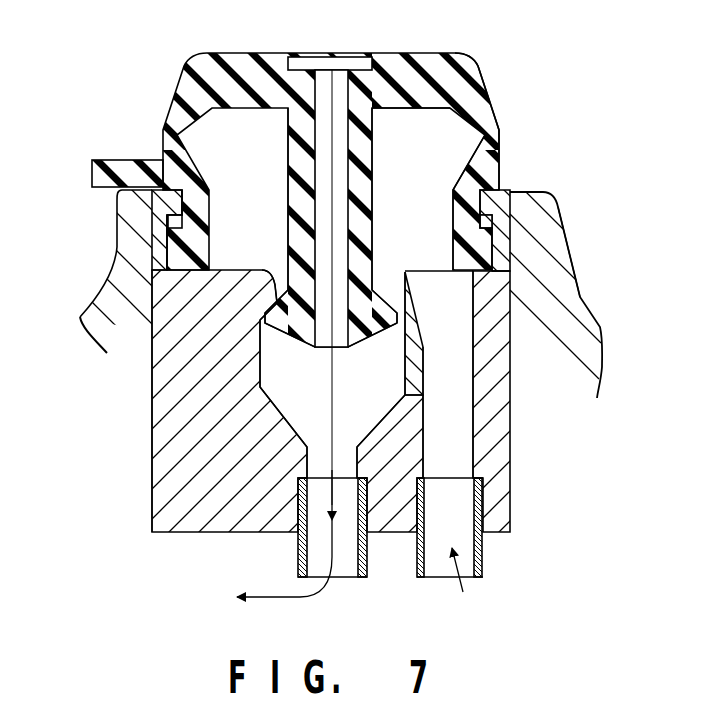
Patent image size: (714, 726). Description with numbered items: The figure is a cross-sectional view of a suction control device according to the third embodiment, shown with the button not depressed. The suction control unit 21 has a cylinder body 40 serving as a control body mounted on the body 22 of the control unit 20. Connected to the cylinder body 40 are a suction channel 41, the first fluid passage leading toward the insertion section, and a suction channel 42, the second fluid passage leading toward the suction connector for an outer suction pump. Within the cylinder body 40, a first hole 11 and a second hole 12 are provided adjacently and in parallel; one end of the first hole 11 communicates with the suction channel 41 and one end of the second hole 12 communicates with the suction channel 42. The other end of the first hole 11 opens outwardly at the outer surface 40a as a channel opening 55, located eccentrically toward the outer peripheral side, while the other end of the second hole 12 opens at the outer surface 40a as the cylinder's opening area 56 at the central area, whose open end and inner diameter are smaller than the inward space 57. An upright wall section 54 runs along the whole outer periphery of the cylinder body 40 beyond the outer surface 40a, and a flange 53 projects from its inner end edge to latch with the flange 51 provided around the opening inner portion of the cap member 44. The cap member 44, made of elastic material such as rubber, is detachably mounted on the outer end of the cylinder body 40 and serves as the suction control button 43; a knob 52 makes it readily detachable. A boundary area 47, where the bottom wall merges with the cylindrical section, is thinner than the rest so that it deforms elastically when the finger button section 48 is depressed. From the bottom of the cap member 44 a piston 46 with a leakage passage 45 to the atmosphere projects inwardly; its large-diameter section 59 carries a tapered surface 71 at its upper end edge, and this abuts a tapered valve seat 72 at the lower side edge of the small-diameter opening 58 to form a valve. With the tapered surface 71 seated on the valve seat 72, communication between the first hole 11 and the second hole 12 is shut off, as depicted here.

The first hole 11 is at (457, 458).
The second hole 12 is at (280, 403).
The control unit 20 is at (625, 246).
The suction control unit 21 is at (92, 428).
The body 22 is at (580, 300).
The cylinder body 40 is at (152, 486).
The outer surface 40a is at (268, 283).
The suction channel (first fluid passage) 41 is at (483, 566).
The suction channel (second fluid passage) 42 is at (298, 559).
The suction control button 43 is at (217, 73).
The cap member 44 is at (455, 67).
The leakage passage 45 is at (317, 90).
The piston 46 is at (372, 171).
The boundary area 47 is at (498, 131).
The finger button section 48 is at (325, 56).
The flange 51 is at (272, 272).
The knob 52 is at (94, 160).
The flange 53 is at (500, 194).
The upright wall section 54 is at (173, 214).
The channel opening 55 is at (440, 285).
The cylinder's opening area 56 is at (380, 283).
The inward space 57 is at (375, 382).
The small-diameter opening 58 is at (153, 322).
The large-diameter section 59 is at (293, 313).
The tapered surface 71 is at (395, 297).
The tapered valve seat 72 is at (395, 306).